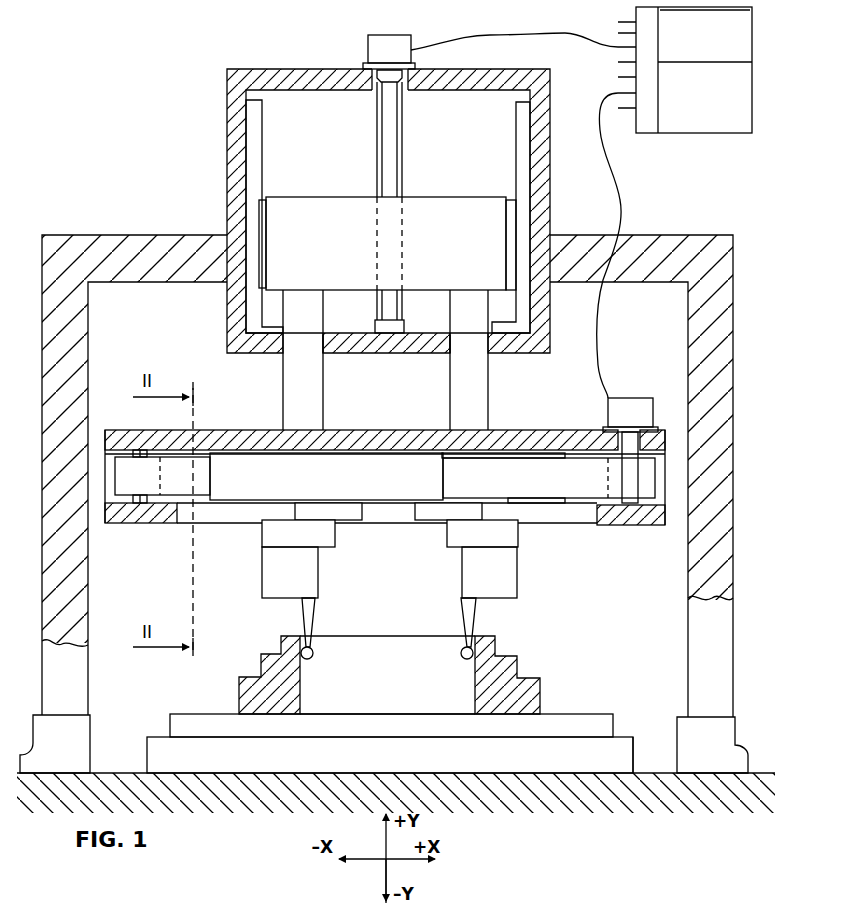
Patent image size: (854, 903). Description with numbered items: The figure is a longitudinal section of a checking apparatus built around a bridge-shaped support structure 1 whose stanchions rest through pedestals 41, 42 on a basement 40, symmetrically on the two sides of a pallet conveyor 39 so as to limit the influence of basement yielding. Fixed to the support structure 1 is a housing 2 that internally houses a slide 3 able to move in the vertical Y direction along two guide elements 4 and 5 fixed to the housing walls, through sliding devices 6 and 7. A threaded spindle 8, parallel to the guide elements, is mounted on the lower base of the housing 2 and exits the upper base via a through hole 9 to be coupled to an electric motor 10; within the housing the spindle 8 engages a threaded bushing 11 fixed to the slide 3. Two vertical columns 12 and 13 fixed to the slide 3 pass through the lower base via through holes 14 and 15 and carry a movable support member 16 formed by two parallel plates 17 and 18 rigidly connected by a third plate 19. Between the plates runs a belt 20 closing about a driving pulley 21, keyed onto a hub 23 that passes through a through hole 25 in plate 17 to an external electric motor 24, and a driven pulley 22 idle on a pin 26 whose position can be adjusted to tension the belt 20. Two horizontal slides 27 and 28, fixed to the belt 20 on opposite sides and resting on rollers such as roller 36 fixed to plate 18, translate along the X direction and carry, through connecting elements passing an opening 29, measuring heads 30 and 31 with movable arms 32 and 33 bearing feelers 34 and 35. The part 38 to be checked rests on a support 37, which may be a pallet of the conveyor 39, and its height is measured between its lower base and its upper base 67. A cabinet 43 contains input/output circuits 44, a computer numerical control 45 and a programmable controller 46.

The support structure 1 is at (92, 253).
The housing 2 is at (232, 150).
The slide 3 is at (260, 244).
The guide element 4 is at (252, 177).
The guide element 5 is at (520, 134).
The sliding device 6 is at (287, 231).
The sliding device 7 is at (511, 218).
The threaded spindle 8 is at (390, 165).
The through hole 9 is at (376, 82).
The electric motor 10 is at (377, 45).
The threaded bushing 11 is at (377, 257).
The vertical column 12 is at (300, 405).
The vertical column 13 is at (468, 390).
The through hole 14 is at (325, 352).
The through hole 15 is at (446, 353).
The movable support member 16 is at (254, 428).
The plate 17 is at (142, 434).
The plate 18 is at (127, 523).
The plate 19 is at (108, 480).
The belt 20 is at (545, 475).
The driving pulley 21 is at (659, 526).
The driven pulley 22 is at (157, 455).
The hub 23 is at (623, 509).
The external electric motor 24 is at (647, 424).
The through hole 25 is at (604, 432).
The pin 26 is at (134, 515).
The horizontal slide 27 is at (300, 493).
The horizontal slide 28 is at (552, 503).
The opening 29 is at (596, 517).
The measuring head 30 is at (278, 565).
The measuring head 31 is at (498, 570).
The movable arm 32 is at (307, 610).
The movable arm 33 is at (470, 612).
The feeler 34 is at (313, 655).
The feeler 35 is at (461, 654).
The roller 36 is at (515, 507).
The support 37 is at (548, 730).
The part 38 is at (515, 678).
The pallet conveyor 39 is at (627, 721).
The basement 40 is at (563, 797).
The pedestal 41 is at (77, 755).
The pedestal 42 is at (722, 746).
The cabinet 43 is at (744, 146).
The input/output circuits 44 is at (643, 125).
The computer numerical control 45 is at (700, 120).
The programmable controller 46 is at (745, 50).
The upper base 67 is at (384, 634).